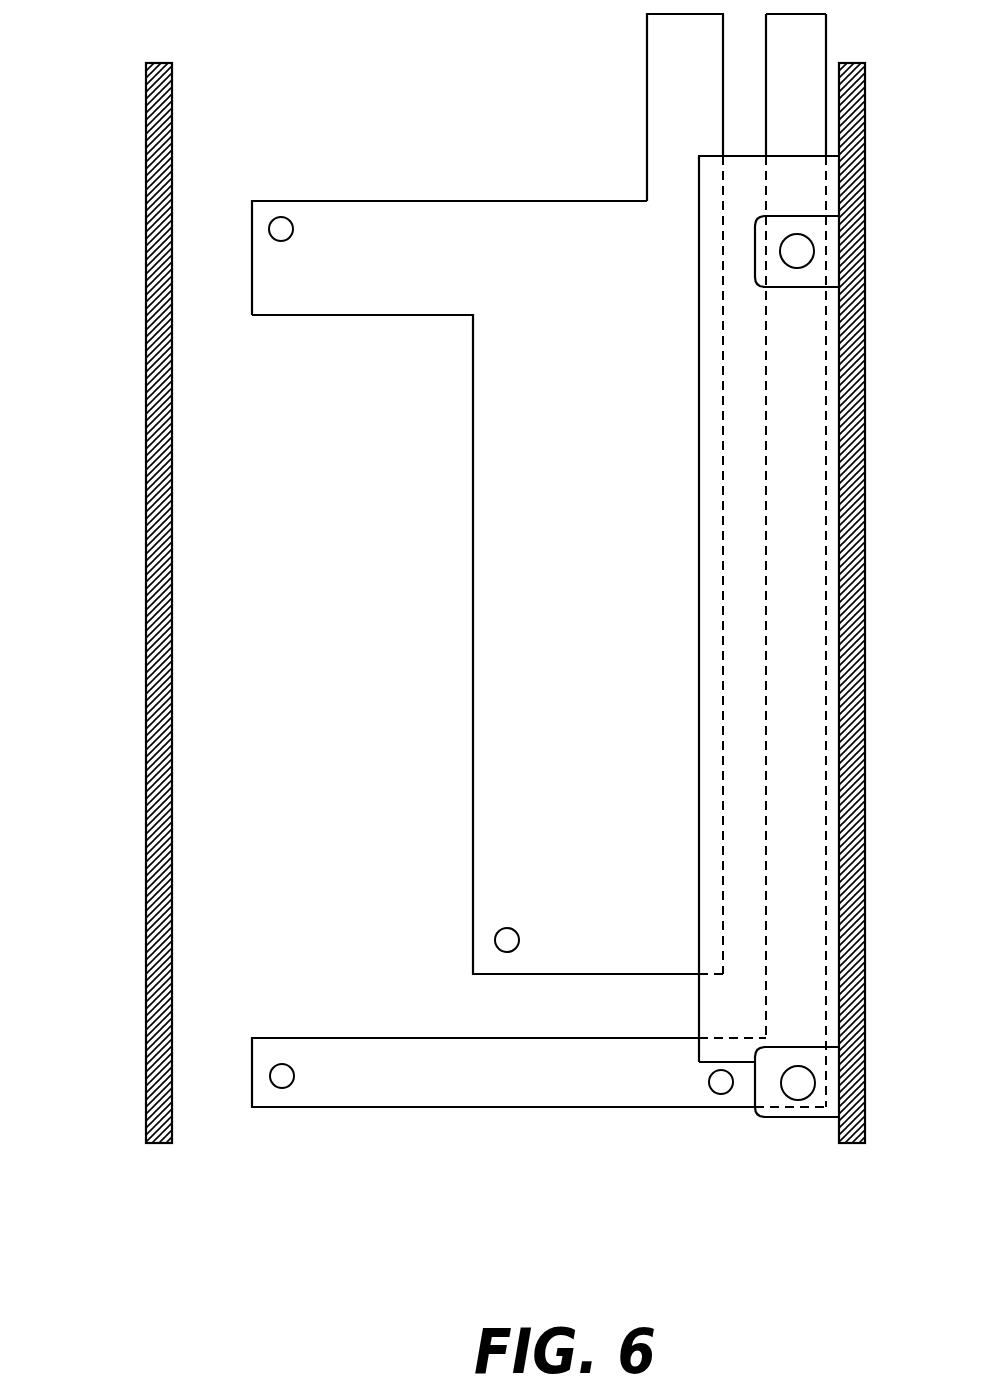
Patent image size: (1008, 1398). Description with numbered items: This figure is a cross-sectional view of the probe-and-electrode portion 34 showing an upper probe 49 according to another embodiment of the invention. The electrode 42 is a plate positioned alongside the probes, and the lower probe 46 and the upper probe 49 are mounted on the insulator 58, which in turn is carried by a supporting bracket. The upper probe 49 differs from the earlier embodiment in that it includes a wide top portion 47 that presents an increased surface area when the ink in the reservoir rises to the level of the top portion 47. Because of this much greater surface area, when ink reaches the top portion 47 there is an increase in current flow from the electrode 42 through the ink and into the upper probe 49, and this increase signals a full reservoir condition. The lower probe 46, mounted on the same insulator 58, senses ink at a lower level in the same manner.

The probe-and-electrode portion 34 is at (817, 1182).
The electrode 42 is at (146, 874).
The lower probe 46 is at (552, 1108).
The wide top portion 47 is at (373, 252).
The upper probe 49 is at (451, 200).
The insulator 58 is at (698, 339).